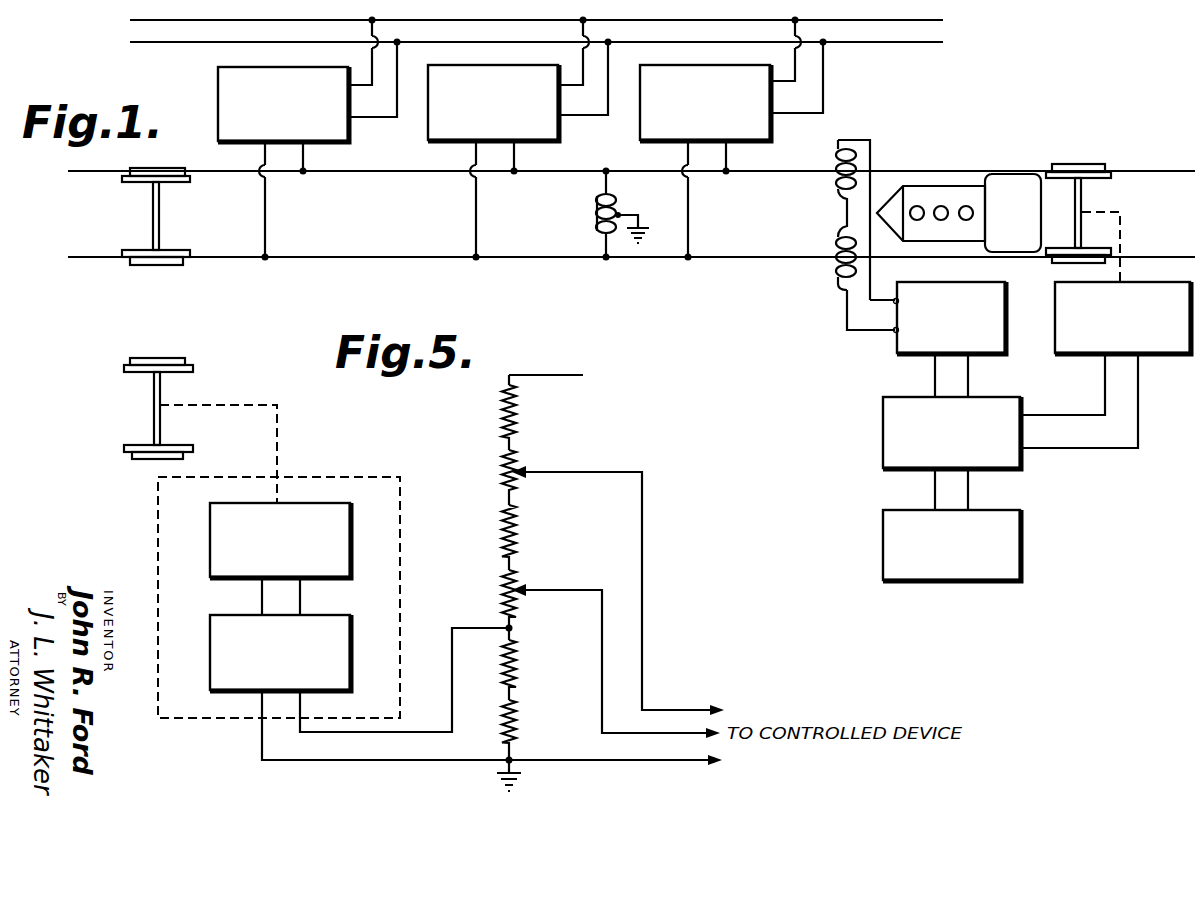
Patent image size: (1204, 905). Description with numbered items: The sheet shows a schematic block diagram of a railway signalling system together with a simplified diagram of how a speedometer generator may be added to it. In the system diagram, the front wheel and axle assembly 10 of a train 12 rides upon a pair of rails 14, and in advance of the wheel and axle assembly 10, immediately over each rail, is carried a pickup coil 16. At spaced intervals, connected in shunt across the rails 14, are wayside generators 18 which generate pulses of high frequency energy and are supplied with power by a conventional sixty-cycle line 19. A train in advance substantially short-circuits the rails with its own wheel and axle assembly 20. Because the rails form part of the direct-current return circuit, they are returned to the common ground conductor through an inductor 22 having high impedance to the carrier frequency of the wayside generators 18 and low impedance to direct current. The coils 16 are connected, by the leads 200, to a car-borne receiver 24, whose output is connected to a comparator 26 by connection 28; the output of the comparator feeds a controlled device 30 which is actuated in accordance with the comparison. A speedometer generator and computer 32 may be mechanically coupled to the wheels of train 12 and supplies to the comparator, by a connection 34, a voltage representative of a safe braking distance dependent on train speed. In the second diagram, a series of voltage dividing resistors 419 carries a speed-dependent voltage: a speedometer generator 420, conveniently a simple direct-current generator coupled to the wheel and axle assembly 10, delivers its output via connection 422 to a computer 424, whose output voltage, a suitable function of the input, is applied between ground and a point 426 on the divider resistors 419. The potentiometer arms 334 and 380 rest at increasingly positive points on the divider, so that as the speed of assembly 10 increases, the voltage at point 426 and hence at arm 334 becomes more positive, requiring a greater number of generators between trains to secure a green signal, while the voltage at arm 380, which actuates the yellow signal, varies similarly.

In FIG. 1, the front wheel and axle assembly 10 is at (1082, 198).
In FIG. 5, the front wheel and axle assembly 10 is at (167, 370).
In FIG. 1, the train 12 is at (968, 185).
In FIG. 1, the rails 14 is at (755, 173).
In FIG. 1, the pickup coil 16 is at (838, 233).
In FIG. 1, the wayside generator 18 is at (349, 131).
In FIG. 1, the line 19 is at (133, 42).
In FIG. 1, the wheel and axle assembly 20 is at (178, 187).
In FIG. 1, the inductor 22 is at (597, 211).
In FIG. 1, the car-borne receiver 24 is at (893, 355).
In FIG. 1, the comparator 26 is at (883, 468).
In FIG. 1, the connection 28 is at (938, 388).
In FIG. 1, the controlled device 30 is at (883, 556).
In FIG. 1, the speedometer generator and computer 32 is at (1150, 355).
In FIG. 5, the speedometer generator and computer 32 is at (398, 468).
In FIG. 1, the connection 34 is at (1135, 388).
In FIG. 5, the connection 34 is at (417, 757).
In FIG. 1, the receiver input leads 200 is at (893, 330).
In FIG. 5, the potentiometer arm 334 is at (551, 477).
In FIG. 5, the potentiometer arm 380 is at (560, 588).
In FIG. 5, the voltage dividing resistors 419 is at (585, 557).
In FIG. 5, the speedometer generator 420 is at (210, 512).
In FIG. 5, the connection 422 is at (262, 604).
In FIG. 5, the computer 424 is at (376, 677).
In FIG. 5, the point 426 is at (512, 629).